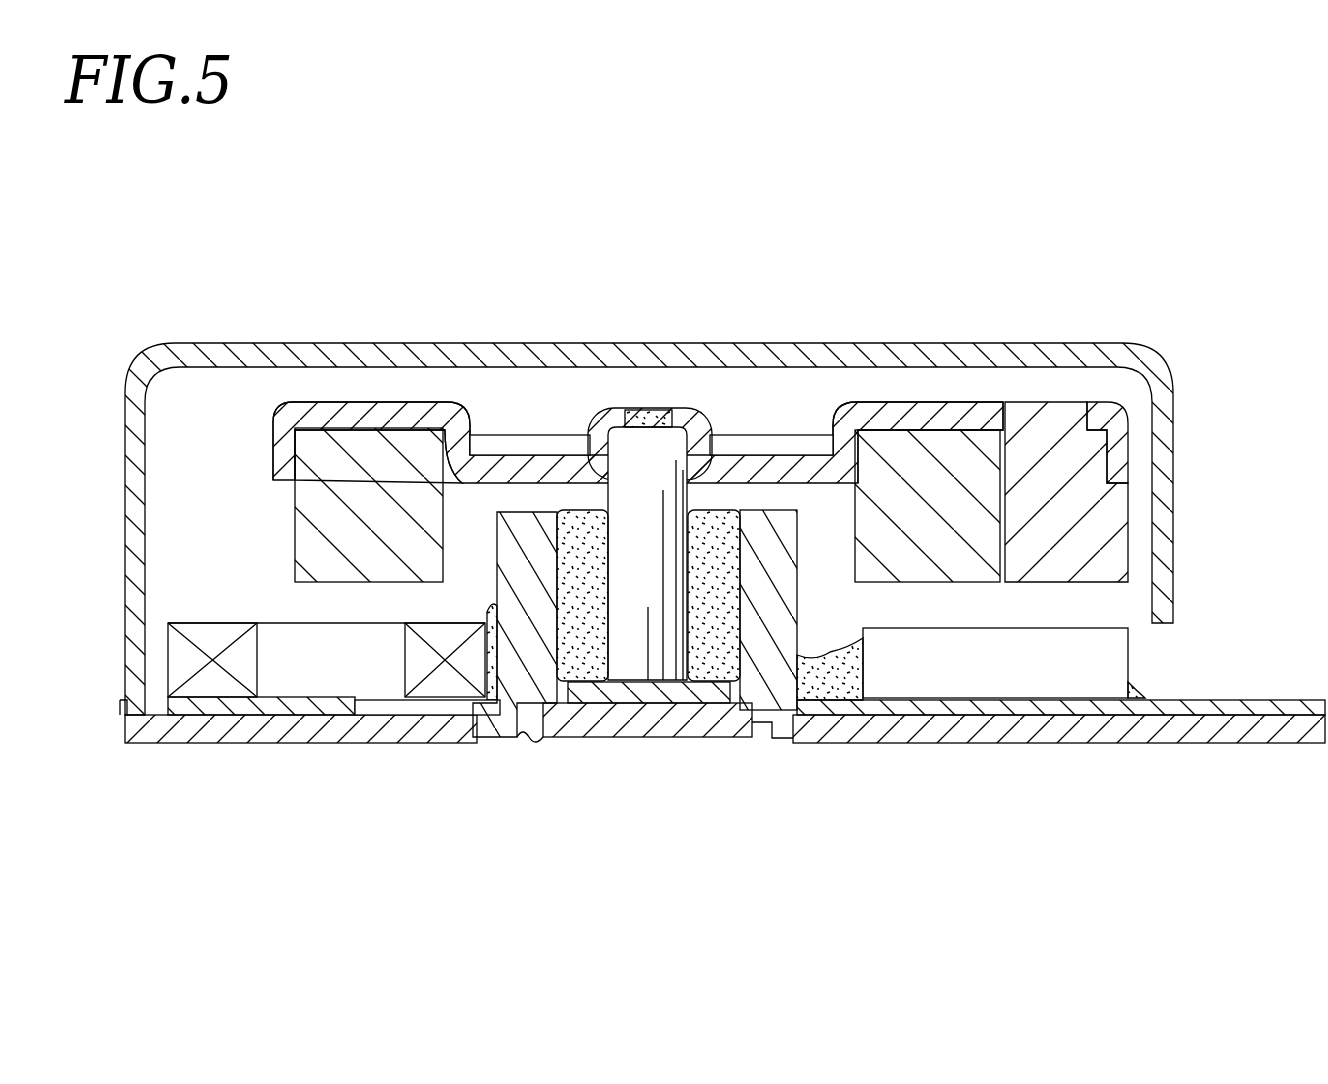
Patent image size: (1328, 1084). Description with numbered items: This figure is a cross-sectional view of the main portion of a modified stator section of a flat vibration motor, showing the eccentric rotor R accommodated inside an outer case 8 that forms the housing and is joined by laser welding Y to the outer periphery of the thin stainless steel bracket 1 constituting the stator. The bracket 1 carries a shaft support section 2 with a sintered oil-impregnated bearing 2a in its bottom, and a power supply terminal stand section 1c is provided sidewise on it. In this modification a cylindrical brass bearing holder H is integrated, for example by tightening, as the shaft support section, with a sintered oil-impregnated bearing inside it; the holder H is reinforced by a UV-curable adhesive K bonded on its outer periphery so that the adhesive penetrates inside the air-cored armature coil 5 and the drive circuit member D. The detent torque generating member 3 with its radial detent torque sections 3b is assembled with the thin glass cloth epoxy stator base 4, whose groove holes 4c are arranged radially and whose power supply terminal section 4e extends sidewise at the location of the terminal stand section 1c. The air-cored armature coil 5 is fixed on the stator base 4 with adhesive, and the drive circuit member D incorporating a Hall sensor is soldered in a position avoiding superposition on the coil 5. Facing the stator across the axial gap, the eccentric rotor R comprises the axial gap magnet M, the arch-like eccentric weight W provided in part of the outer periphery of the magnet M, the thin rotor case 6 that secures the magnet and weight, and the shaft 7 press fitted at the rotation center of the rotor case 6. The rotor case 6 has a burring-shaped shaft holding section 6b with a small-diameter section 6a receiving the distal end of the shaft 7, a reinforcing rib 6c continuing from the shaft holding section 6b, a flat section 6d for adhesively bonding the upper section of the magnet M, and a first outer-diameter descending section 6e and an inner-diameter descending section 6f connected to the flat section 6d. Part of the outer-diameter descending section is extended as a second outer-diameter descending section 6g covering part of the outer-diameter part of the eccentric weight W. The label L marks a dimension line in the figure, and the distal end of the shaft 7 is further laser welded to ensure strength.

The outer case 8 is at (188, 352).
The rotor case 6 is at (748, 462).
The small-diameter section 6a is at (632, 412).
The shaft holding section 6b is at (703, 443).
The reinforcing rib 6c is at (800, 447).
The flat section 6d is at (937, 400).
The first outer-diameter descending section 6e is at (287, 440).
The inner-diameter descending section 6f is at (420, 465).
The second outer-diameter descending section 6g is at (1130, 440).
The stator base 4 is at (1059, 710).
The groove holes 4c is at (380, 693).
The power supply terminal section 4e is at (1262, 700).
The air-cored armature coil 5 is at (213, 675).
The detent torque generating member 3 is at (477, 743).
The detent torque sections 3b is at (352, 712).
The bracket 1 is at (407, 743).
The power supply terminal stand section 1c is at (1296, 745).
The shaft support section 2 is at (640, 703).
The sintered oil-impregnated bearing 2a is at (612, 684).
The shaft 7 is at (690, 672).
The cylindrical brass bearing holder H is at (773, 650).
The UV-curable adhesive K is at (827, 667).
The drive circuit member D is at (953, 683).
The shaft axis L is at (648, 412).
The axial gap magnet M is at (355, 520).
The eccentric rotor R is at (1169, 363).
The eccentric weight W is at (1107, 523).
The laser welding Y is at (123, 702).